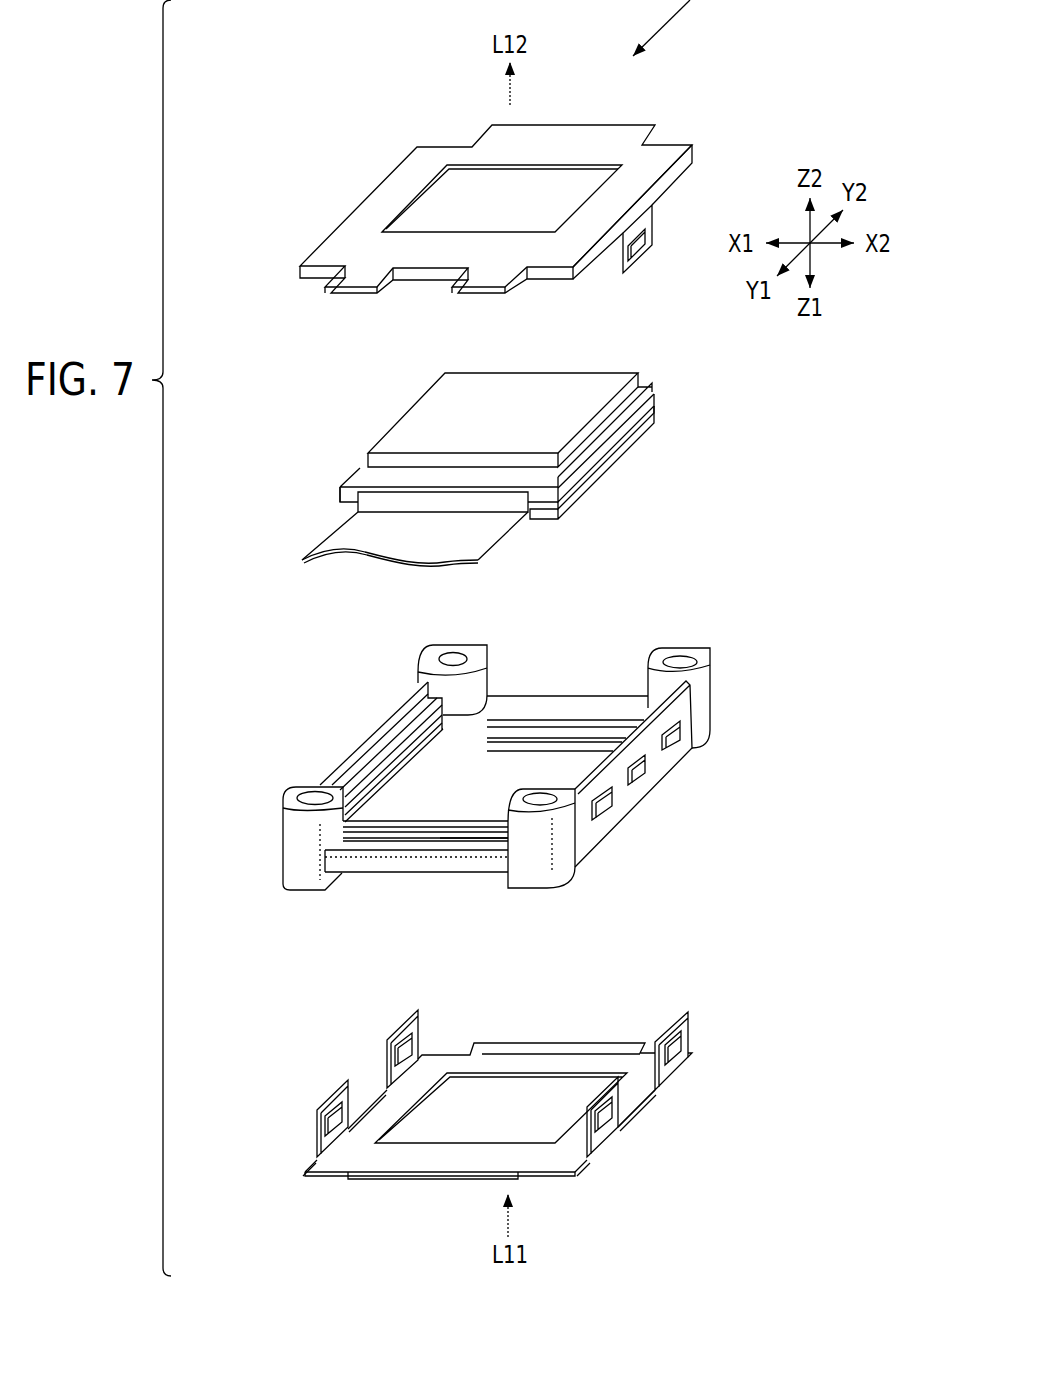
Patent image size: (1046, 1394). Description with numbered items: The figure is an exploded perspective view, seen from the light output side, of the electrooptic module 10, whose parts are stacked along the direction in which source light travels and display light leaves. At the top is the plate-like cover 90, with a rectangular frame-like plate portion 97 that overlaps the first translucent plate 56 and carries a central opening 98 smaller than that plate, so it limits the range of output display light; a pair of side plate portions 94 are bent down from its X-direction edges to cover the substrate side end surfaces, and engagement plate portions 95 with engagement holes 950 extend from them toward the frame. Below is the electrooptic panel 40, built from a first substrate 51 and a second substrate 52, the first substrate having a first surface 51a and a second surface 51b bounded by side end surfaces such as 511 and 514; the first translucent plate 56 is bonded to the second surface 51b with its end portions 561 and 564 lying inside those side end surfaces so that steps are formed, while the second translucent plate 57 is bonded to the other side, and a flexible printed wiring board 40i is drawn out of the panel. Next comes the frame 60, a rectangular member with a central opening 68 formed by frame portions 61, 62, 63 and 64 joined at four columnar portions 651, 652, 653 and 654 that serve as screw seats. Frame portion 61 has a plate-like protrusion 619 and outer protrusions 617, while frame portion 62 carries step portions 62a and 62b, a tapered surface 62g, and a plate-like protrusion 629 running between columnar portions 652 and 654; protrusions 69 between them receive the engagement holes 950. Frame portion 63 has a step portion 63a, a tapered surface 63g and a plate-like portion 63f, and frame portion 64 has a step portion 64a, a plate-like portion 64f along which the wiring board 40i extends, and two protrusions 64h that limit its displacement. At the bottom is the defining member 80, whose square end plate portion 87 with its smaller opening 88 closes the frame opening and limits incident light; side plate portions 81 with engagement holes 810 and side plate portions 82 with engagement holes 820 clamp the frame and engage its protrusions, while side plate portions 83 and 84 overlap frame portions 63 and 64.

The electrooptic module 10 is at (787, 97).
The plate-like cover 90 is at (348, 186).
The frame-like plate portion 97 is at (571, 143).
The opening 98 is at (532, 226).
The side plate portions 94 is at (592, 253).
The engagement plate portions 95 is at (653, 217).
The engagement holes 950 is at (647, 250).
The electrooptic panel 40 is at (750, 351).
The first translucent plate 56 is at (641, 378).
The end portion 564 is at (390, 458).
The end portion 561 is at (615, 417).
The first substrate 51 is at (657, 388).
The first surface 51a is at (568, 508).
The second surface 51b is at (557, 478).
The side end surface 511 is at (608, 443).
The side end surface 514 is at (340, 495).
The second substrate 52 is at (650, 412).
The second translucent plate 57 is at (637, 433).
The flexible printed wiring board 40i is at (365, 538).
The frame 60 is at (266, 798).
The frame portion 61 is at (662, 758).
The protrusions 617 is at (681, 737).
The plate-like protrusion 619 is at (698, 707).
The protrusions 69 is at (643, 770).
The frame portion 62 is at (350, 777).
The step portion 62a is at (360, 780).
The step portion 62b is at (383, 770).
The tapered surface 62g is at (413, 740).
The plate-like protrusion 629 is at (323, 777).
The frame portion 63 is at (525, 700).
The step portion 63a is at (580, 712).
The plate-like portion 63f is at (586, 705).
The tapered surface 63g is at (598, 722).
The opening 68 is at (500, 750).
The frame portion 64 is at (363, 867).
The step portion 64a is at (462, 822).
The plate-like portion 64f is at (482, 824).
The protrusions 64h is at (437, 850).
The columnar portion 651 is at (712, 688).
The columnar portion 652 is at (421, 660).
The columnar portion 653 is at (558, 863).
The columnar portion 654 is at (290, 855).
The defining member 80 is at (366, 1094).
The side plate portions 81 is at (650, 1058).
The engagement hole 810 is at (677, 1057).
The side plate portions 82 is at (406, 1050).
The engagement hole 820 is at (405, 1040).
The side plate portion 83 is at (580, 1042).
The side plate portion 84 is at (427, 1178).
The end plate portion 87 is at (637, 1098).
The opening 88 is at (531, 1128).